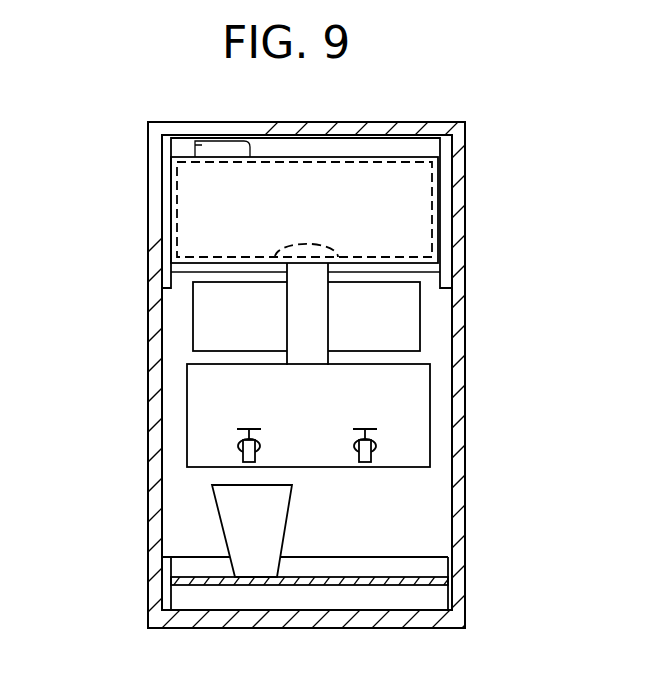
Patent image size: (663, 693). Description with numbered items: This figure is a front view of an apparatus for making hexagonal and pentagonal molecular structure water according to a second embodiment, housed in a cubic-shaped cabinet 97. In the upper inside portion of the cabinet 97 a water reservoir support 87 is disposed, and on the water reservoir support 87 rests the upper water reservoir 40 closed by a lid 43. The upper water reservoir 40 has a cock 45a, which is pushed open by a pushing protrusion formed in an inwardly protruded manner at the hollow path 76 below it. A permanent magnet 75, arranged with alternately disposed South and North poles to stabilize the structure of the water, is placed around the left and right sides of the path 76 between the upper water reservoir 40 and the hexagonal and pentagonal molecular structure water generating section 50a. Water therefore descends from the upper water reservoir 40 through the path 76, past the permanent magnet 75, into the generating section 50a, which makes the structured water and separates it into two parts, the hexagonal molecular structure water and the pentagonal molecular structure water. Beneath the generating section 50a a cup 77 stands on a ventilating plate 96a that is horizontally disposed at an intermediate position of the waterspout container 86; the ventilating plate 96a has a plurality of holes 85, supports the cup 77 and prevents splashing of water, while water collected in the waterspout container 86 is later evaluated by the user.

The upper water reservoir 40 is at (430, 240).
The lid 43 is at (195, 151).
The cock 45a is at (330, 246).
The water reservoir support 87 is at (170, 273).
The hollow path 76 is at (322, 314).
The permanent magnet 75 is at (410, 346).
The cabinet 97 is at (160, 402).
The hexagonal and pentagonal molecular structure water generating section 50a is at (418, 421).
The cup 77 is at (228, 520).
The holes 85 is at (406, 580).
The ventilating plate 96a is at (440, 577).
The waterspout container 86 is at (205, 626).